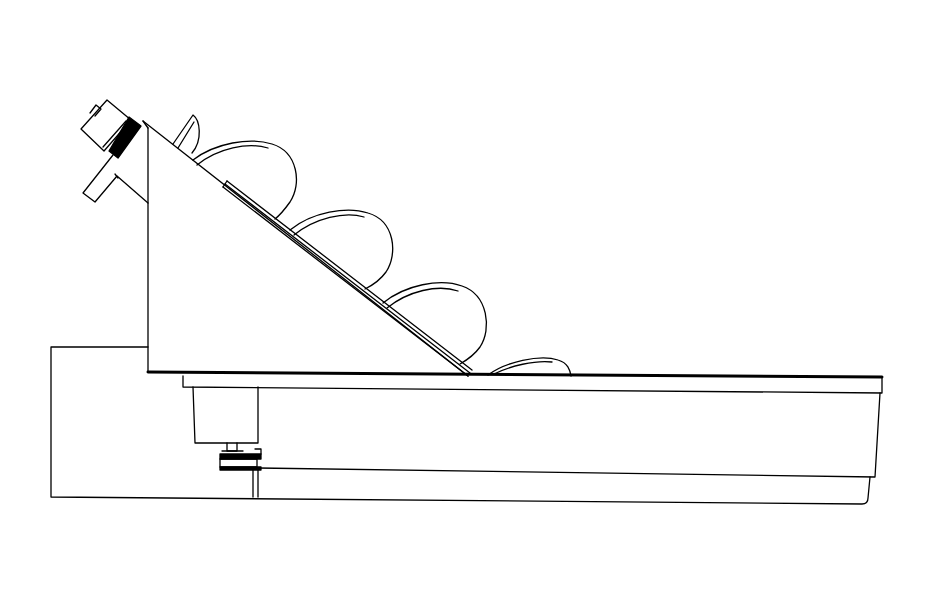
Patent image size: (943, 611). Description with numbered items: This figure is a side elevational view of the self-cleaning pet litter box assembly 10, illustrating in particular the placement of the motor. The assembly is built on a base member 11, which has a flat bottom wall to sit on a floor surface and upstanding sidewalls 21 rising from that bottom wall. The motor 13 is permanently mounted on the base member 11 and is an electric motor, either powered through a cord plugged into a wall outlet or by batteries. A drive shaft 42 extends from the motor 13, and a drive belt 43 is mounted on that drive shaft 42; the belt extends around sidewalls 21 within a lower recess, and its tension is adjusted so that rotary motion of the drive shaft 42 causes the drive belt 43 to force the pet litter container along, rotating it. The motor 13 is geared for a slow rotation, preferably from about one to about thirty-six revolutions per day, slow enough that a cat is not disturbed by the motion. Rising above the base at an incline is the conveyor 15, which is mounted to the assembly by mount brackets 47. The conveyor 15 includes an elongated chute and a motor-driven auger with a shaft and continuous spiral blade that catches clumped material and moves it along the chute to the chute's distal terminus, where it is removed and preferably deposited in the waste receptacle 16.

The self-cleaning pet litter box assembly 10 is at (607, 193).
The base member 11 is at (349, 499).
The motor 13 is at (193, 404).
The conveyor 15 is at (172, 278).
The waste receptacle 16 is at (72, 487).
The upstanding sidewalls 21 is at (600, 463).
The drive shaft 42 is at (220, 460).
The drive belt 43 is at (245, 471).
The mount brackets 47 is at (261, 308).